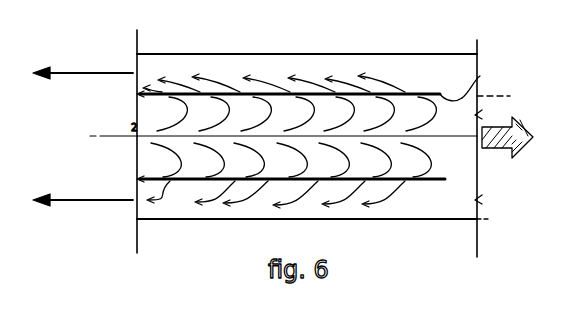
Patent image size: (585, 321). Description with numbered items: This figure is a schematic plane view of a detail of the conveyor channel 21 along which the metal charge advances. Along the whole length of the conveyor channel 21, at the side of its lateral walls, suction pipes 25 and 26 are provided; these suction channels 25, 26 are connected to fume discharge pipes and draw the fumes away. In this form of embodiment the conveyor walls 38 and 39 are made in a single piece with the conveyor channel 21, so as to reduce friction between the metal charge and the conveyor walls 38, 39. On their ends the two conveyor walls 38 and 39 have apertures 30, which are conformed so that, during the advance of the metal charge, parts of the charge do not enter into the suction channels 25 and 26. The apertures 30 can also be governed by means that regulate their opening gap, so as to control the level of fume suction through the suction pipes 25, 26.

The suction pipe 26 is at (313, 52).
The suction pipe 25 is at (430, 216).
The apertures 30 is at (411, 92).
The conveyor wall 38 is at (445, 180).
The conveyor wall 39 is at (480, 76).
The conveyor channel 21 is at (472, 118).